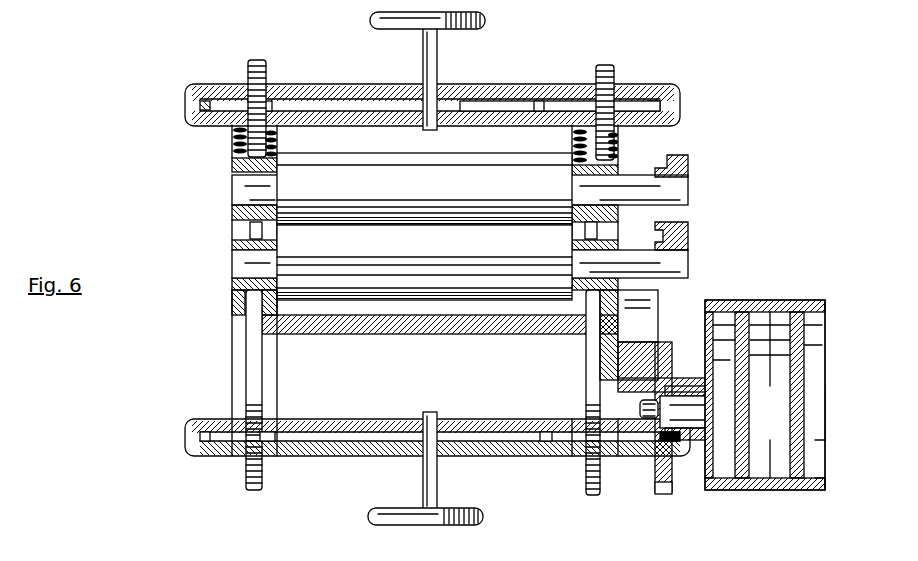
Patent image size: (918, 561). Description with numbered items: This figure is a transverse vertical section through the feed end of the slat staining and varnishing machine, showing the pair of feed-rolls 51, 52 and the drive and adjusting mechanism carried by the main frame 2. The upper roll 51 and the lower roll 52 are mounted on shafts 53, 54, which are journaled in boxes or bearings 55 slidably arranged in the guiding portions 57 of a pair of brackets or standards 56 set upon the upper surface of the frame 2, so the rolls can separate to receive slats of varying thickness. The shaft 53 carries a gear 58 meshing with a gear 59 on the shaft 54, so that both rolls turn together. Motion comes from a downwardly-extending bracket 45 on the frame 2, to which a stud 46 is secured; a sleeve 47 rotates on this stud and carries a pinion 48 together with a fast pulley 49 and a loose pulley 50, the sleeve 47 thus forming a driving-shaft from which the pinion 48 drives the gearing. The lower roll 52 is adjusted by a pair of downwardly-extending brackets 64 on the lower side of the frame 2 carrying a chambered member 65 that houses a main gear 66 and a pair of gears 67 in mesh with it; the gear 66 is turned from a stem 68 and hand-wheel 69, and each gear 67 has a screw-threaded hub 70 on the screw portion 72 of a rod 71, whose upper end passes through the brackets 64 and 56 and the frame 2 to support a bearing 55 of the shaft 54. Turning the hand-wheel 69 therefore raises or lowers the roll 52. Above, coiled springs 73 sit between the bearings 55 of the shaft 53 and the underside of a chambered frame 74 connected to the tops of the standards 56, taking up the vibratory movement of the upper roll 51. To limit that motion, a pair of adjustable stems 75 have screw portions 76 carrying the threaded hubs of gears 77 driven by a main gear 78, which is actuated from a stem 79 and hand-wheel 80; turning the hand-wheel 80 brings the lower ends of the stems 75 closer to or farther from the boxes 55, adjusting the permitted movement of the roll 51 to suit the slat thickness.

The main frame 2 is at (234, 322).
The downwardly-extending member or bracket 45 is at (640, 355).
The stud 46 is at (732, 413).
The sleeve 47 is at (700, 445).
The pinion 48 is at (662, 492).
The fast pulley 49 is at (740, 305).
The loose pulley 50 is at (796, 305).
The upper feed-roll 51 is at (424, 189).
The lower feed-roll 52 is at (424, 262).
The shaft or spindle 53 is at (258, 186).
The shaft or spindle 54 is at (258, 256).
The boxes or bearings 55 is at (280, 162).
The brackets or standards 56 is at (242, 152).
The guiding portions 57 is at (275, 232).
The gear 58 is at (690, 168).
The gear 59 is at (690, 242).
The downwardly-extending brackets 64 is at (232, 345).
The chambered frame or member 65 is at (190, 437).
The main gear 66 is at (376, 448).
The gears 67 is at (280, 458).
The stem 68 is at (436, 416).
The hand-wheel 69 is at (455, 526).
The screw-threaded hub 70 is at (240, 458).
The rods 71 is at (258, 366).
The screw portion 72 is at (258, 488).
The coiled springs 73 is at (236, 145).
The chambered member or frame 74 is at (345, 90).
The adjustable stems or rods 75 is at (258, 62).
The screw portions 76 is at (270, 98).
The gears 77 is at (190, 100).
The main gear 78 is at (494, 96).
The stem 79 is at (438, 60).
The hand-wheel 80 is at (485, 20).